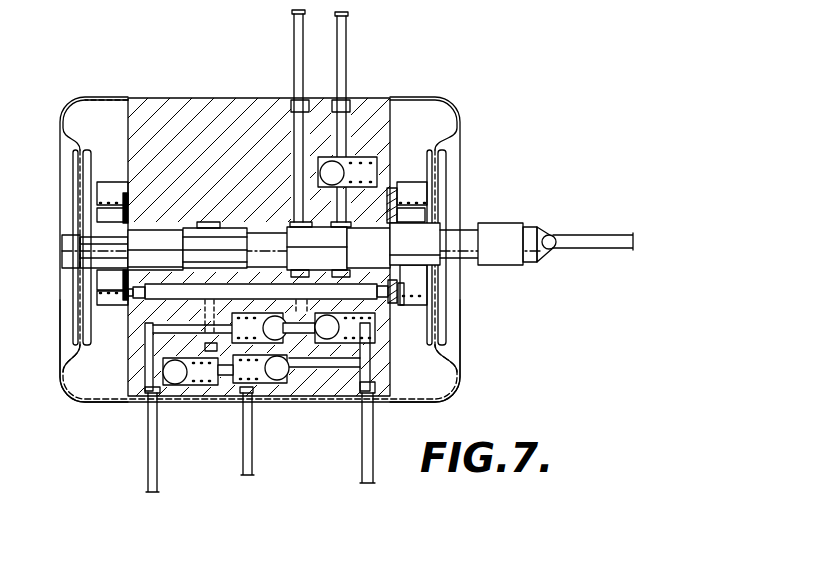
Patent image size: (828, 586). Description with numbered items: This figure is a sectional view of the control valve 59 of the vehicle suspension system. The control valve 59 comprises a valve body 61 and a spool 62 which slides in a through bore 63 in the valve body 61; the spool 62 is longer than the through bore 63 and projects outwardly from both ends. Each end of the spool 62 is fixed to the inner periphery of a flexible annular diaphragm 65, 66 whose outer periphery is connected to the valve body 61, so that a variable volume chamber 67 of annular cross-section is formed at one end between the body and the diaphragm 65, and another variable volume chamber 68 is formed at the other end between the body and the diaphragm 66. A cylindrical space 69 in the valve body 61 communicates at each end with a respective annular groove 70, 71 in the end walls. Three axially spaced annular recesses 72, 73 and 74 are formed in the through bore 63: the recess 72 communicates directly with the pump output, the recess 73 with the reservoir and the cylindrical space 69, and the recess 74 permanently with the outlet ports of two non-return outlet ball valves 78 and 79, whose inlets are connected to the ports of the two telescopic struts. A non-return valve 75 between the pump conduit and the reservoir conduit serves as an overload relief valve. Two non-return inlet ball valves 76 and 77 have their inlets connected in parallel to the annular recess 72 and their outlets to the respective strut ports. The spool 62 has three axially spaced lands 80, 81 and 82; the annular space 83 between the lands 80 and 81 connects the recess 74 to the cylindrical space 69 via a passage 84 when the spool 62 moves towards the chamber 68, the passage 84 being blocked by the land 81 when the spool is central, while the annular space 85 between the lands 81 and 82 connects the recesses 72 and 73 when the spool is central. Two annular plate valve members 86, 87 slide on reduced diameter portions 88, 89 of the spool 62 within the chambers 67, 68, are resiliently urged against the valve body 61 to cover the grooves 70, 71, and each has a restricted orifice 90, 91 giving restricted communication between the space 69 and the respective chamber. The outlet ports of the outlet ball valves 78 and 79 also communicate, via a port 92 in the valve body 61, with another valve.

The control valve 59 is at (159, 87).
The valve body 61 is at (200, 128).
The spool 62 is at (503, 233).
The through bore 63 is at (262, 228).
The annular diaphragm 65 is at (70, 395).
The annular diaphragm 66 is at (462, 378).
The variable volume chamber 67 is at (78, 372).
The variable volume chamber 68 is at (443, 362).
The cylindrical space 69 is at (157, 298).
The annular groove 70 is at (142, 202).
The annular groove 71 is at (388, 196).
The annular recess 72 is at (294, 222).
The annular recess 73 is at (345, 195).
The annular recess 74 is at (235, 228).
The non-return valve 75 is at (322, 165).
The non-return inlet ball valve 76 is at (303, 393).
The non-return inlet ball valve 77 is at (333, 393).
The non-return outlet ball valve 78 is at (180, 378).
The non-return outlet ball valve 79 is at (289, 373).
The land 80 is at (140, 240).
The land 81 is at (117, 252).
The land 82 is at (395, 240).
The annular space 83 is at (195, 222).
The passage 84 is at (217, 375).
The annular space 85 is at (340, 268).
The annular plate valve member 86 is at (127, 308).
The annular plate valve member 87 is at (400, 275).
The reduced diameter portion 88 is at (113, 257).
The reduced diameter portion 89 is at (405, 265).
The restricted orifice 90 is at (97, 212).
The restricted orifice 91 is at (440, 198).
The port 92 is at (250, 400).